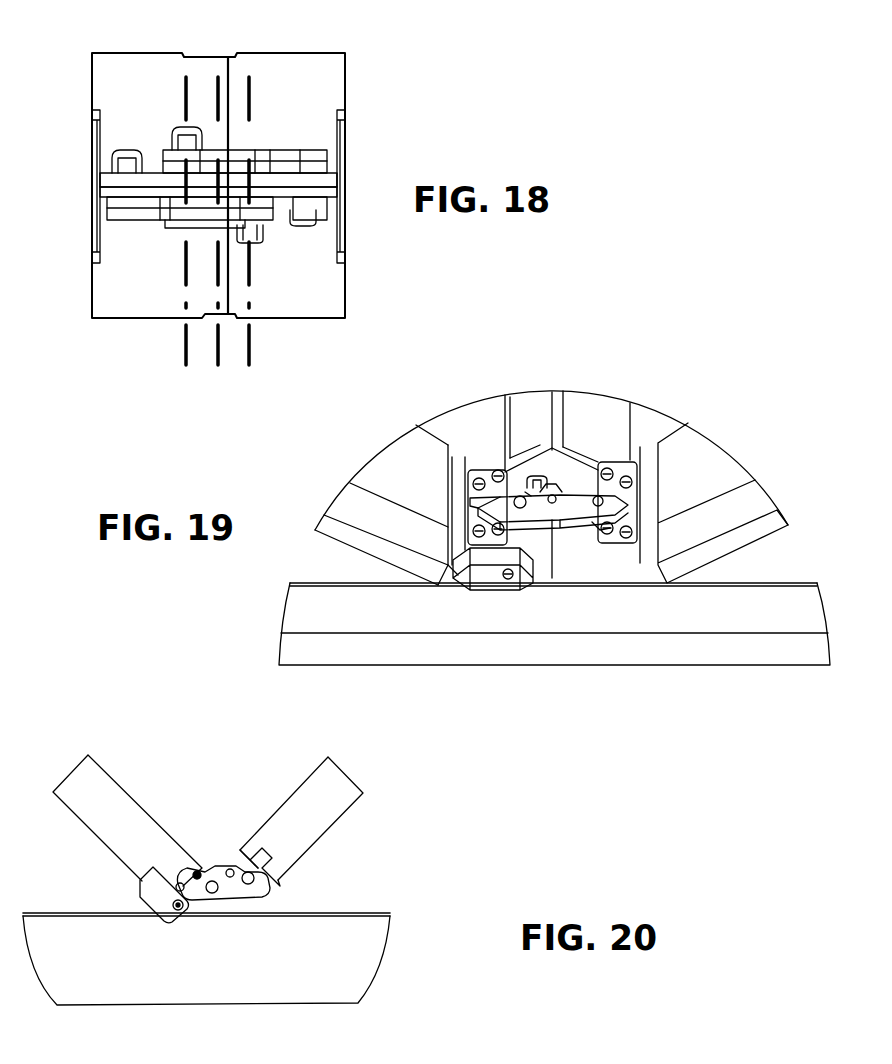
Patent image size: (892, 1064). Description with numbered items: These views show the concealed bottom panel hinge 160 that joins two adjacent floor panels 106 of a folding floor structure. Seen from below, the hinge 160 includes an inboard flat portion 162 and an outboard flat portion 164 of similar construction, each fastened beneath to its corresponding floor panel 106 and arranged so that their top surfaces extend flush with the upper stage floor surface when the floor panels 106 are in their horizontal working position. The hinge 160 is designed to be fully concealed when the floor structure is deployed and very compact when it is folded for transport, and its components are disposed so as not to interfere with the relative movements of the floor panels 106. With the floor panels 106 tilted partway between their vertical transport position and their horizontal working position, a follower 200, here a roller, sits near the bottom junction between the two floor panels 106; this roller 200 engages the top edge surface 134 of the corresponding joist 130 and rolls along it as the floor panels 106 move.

In FIG. 19, the floor panel 106 is at (487, 423).
In FIG. 20, the floor panel 106 is at (116, 797).
In FIG. 19, the joist 130 is at (667, 653).
In FIG. 20, the joist 130 is at (370, 965).
In FIG. 19, the top edge surface 134 is at (742, 580).
In FIG. 20, the top edge surface 134 is at (364, 909).
In FIG. 18, the bottom panel hinge 160 is at (390, 108).
In FIG. 19, the bottom panel hinge 160 is at (588, 426).
In FIG. 20, the bottom panel hinge 160 is at (207, 800).
In FIG. 18, the inboard flat portion 162 is at (130, 303).
In FIG. 18, the outboard flat portion 164 is at (303, 303).
In FIG. 19, the follower 200 is at (517, 588).
In FIG. 20, the follower 200 is at (178, 922).